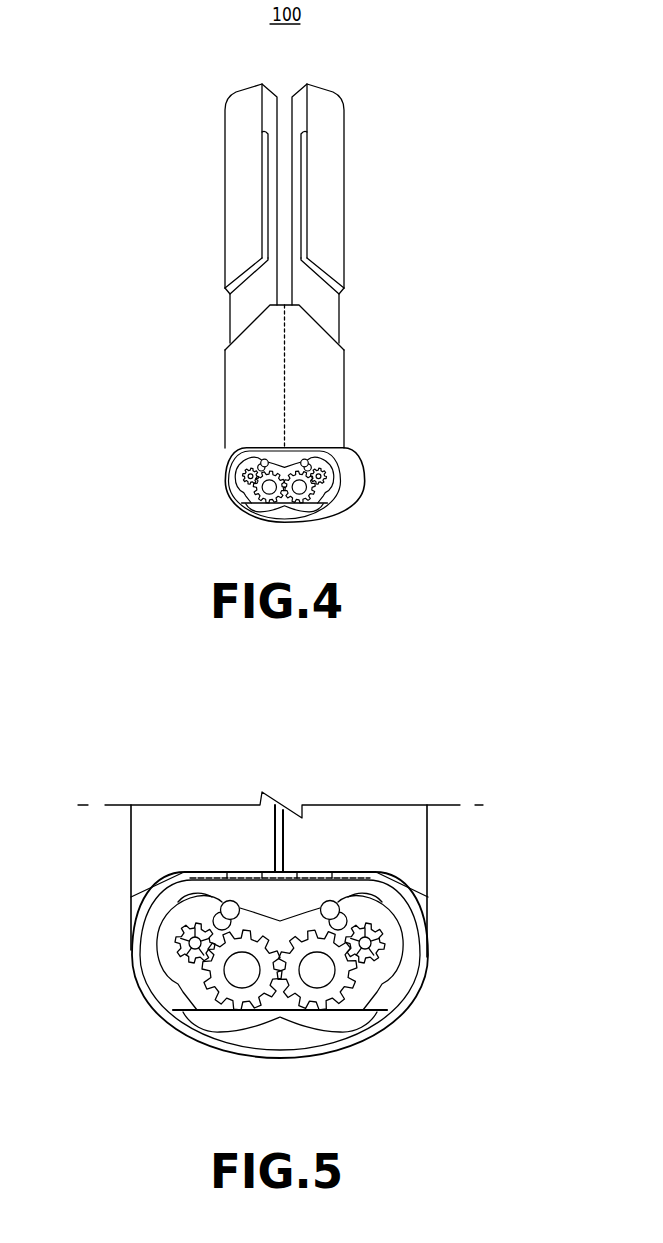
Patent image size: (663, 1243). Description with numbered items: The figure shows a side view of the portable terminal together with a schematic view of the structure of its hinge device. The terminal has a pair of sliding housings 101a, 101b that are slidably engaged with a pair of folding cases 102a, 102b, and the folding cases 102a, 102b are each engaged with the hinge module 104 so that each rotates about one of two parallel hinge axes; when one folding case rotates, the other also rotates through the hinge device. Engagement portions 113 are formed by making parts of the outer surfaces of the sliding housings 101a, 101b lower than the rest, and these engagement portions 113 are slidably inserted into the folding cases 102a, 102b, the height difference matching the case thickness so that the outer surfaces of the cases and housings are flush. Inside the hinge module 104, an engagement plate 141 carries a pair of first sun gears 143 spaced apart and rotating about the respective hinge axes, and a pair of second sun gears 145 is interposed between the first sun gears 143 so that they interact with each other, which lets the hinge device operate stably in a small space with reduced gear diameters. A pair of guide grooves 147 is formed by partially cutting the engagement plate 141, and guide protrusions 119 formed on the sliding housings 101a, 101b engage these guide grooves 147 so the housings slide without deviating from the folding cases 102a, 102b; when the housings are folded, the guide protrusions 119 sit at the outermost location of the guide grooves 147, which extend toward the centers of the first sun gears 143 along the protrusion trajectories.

In FIG. 4, the sliding housing 101a is at (347, 185).
In FIG. 4, the sliding housing 101b is at (222, 190).
In FIG. 4, the engagement portion 113 is at (241, 317).
In FIG. 4, the folding case 102a is at (347, 400).
In FIG. 4, the folding case 102b is at (222, 404).
In FIG. 4, the hinge module 104 is at (349, 490).
In FIG. 5, the hinge module 104 is at (149, 1011).
In FIG. 5, the engagement plate 141 is at (395, 962).
In FIG. 5, the first sun gear 143 is at (176, 942).
In FIG. 5, the second sun gear 145 is at (240, 976).
In FIG. 5, the guide protrusion 119 is at (226, 901).
In FIG. 5, the guide groove 147 is at (186, 906).